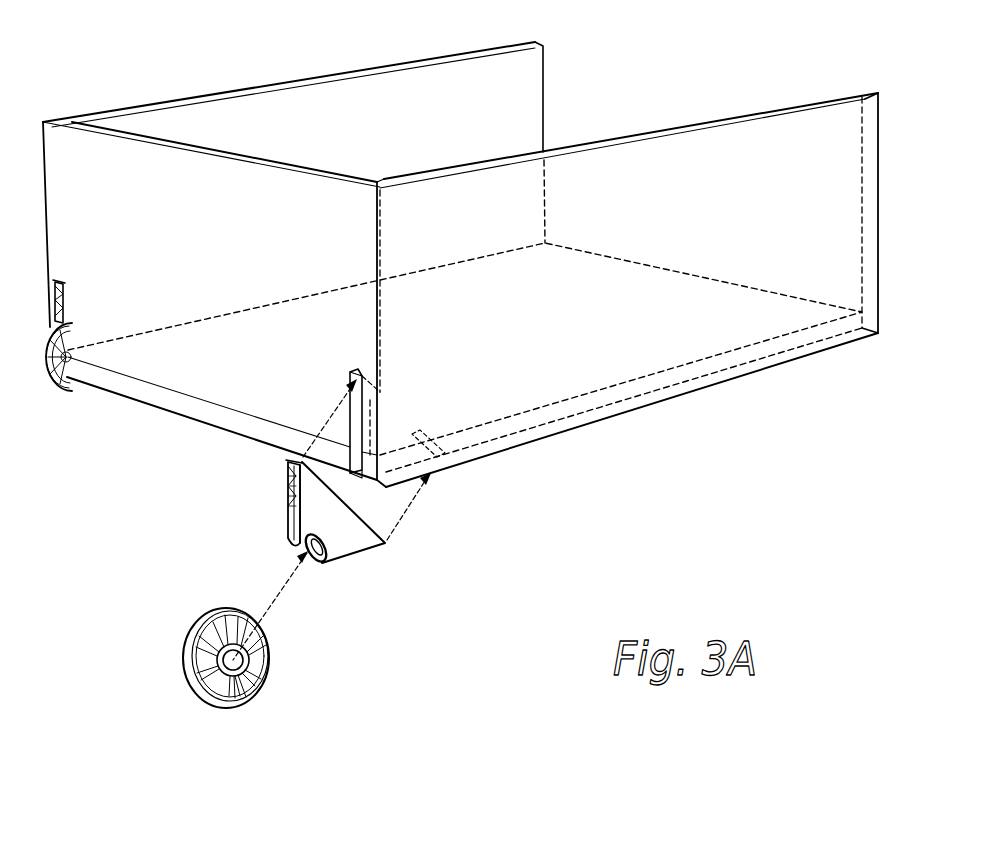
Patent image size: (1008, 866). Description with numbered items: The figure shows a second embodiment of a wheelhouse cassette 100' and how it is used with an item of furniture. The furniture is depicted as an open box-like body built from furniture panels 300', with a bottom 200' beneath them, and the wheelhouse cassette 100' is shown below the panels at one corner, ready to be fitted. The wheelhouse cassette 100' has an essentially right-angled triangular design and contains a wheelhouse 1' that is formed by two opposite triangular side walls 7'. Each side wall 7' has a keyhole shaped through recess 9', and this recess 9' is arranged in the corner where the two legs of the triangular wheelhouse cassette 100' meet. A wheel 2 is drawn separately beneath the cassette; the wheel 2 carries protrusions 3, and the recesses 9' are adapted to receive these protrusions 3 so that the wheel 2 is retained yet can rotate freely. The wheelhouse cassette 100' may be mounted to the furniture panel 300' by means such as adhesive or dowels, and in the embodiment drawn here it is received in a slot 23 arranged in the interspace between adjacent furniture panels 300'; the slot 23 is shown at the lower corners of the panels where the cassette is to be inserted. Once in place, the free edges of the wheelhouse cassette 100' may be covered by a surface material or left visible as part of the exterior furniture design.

The furniture panel 300' is at (460, 270).
The drawer bottom 200' is at (465, 394).
The wheelhouse cassette 100' is at (392, 491).
The slot 23 is at (62, 304).
The side wall 7' is at (310, 543).
The through recess 9' is at (262, 596).
The wheelhouse 1' is at (347, 588).
The wheel 2 is at (258, 684).
The protrusion 3 is at (233, 674).